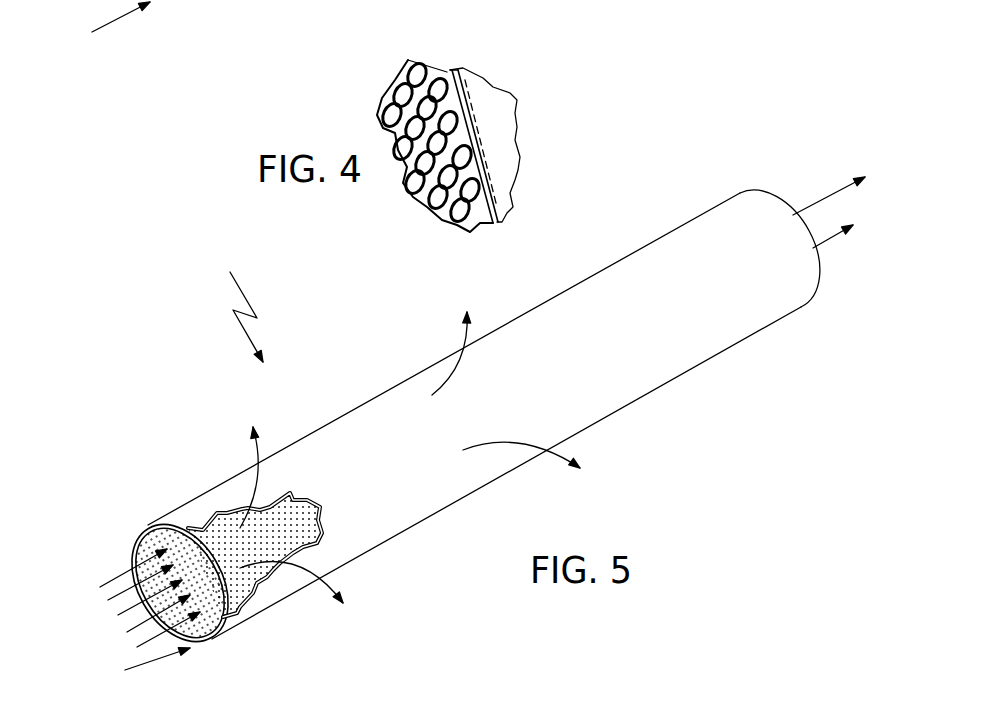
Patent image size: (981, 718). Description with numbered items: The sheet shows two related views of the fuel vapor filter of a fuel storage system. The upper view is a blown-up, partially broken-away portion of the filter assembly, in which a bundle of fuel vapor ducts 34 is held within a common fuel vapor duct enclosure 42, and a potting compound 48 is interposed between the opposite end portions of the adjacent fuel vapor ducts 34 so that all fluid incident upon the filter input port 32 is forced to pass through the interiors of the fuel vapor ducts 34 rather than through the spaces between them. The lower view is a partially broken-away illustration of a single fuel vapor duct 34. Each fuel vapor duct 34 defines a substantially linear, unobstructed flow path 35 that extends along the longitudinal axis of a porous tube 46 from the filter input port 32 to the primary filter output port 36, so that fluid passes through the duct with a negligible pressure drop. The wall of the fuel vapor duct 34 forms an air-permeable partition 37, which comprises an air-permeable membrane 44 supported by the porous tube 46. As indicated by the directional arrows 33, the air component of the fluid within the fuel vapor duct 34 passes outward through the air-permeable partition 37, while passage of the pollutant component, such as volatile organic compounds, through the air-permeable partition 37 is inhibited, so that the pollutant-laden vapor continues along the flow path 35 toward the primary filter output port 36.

In FIG. 5, the filter input port 32 is at (132, 553).
In FIG. 5, the directional arrows 33 is at (263, 477).
In FIG. 4, the fuel vapor duct 34 is at (463, 226).
In FIG. 5, the fuel vapor duct 34 is at (210, 0).
In FIG. 5, the unobstructed flow path 35 is at (118, 615).
In FIG. 5, the primary filter output port 36 is at (818, 272).
In FIG. 5, the air-permeable partition 37 is at (160, 652).
In FIG. 4, the common fuel vapor duct enclosure 42 is at (498, 102).
In FIG. 5, the air-permeable membrane 44 is at (227, 638).
In FIG. 5, the porous tube 46 is at (233, 618).
In FIG. 4, the potting compound 48 is at (430, 65).